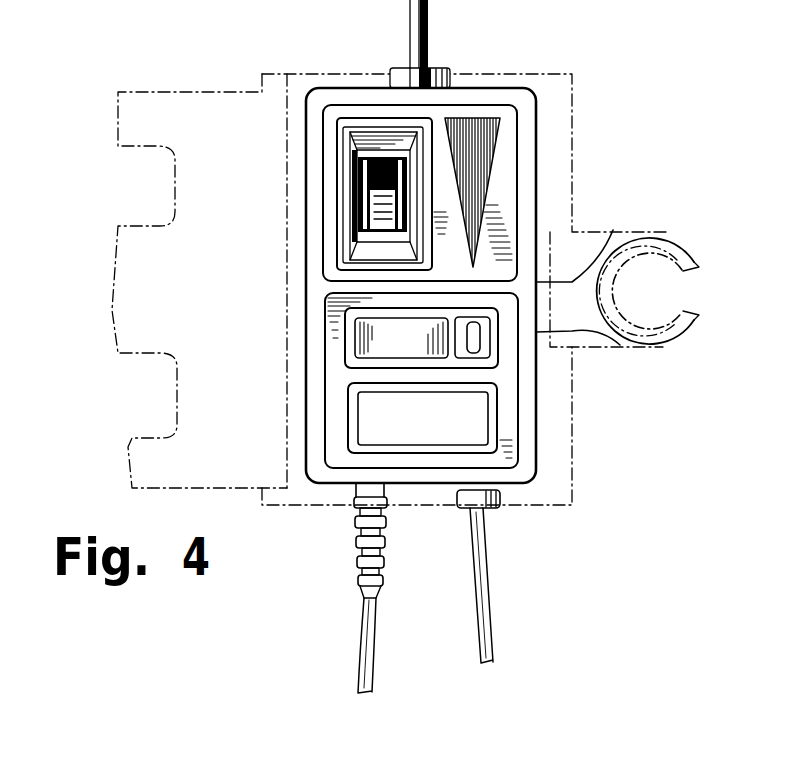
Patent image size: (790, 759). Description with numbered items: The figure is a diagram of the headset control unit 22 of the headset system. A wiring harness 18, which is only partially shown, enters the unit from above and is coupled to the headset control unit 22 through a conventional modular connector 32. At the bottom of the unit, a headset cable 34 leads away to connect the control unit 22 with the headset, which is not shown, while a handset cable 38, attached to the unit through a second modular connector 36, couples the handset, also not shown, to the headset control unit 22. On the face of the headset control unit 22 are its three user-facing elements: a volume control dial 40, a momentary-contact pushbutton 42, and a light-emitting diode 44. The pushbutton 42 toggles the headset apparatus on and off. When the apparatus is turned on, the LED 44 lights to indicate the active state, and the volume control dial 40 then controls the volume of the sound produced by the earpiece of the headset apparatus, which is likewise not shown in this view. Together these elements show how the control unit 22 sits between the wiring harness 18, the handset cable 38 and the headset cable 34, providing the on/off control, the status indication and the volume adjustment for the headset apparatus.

The wiring harness 18 is at (410, 4).
The modular connector 32 is at (450, 68).
The headset control unit 22 is at (613, 230).
The volume control dial 40 is at (342, 204).
The momentary-contact pushbutton 42 is at (345, 360).
The light-emitting diode (LED) 44 is at (474, 349).
The headset cable 34 is at (367, 605).
The modular connector 36 is at (500, 508).
The handset cable 38 is at (478, 622).